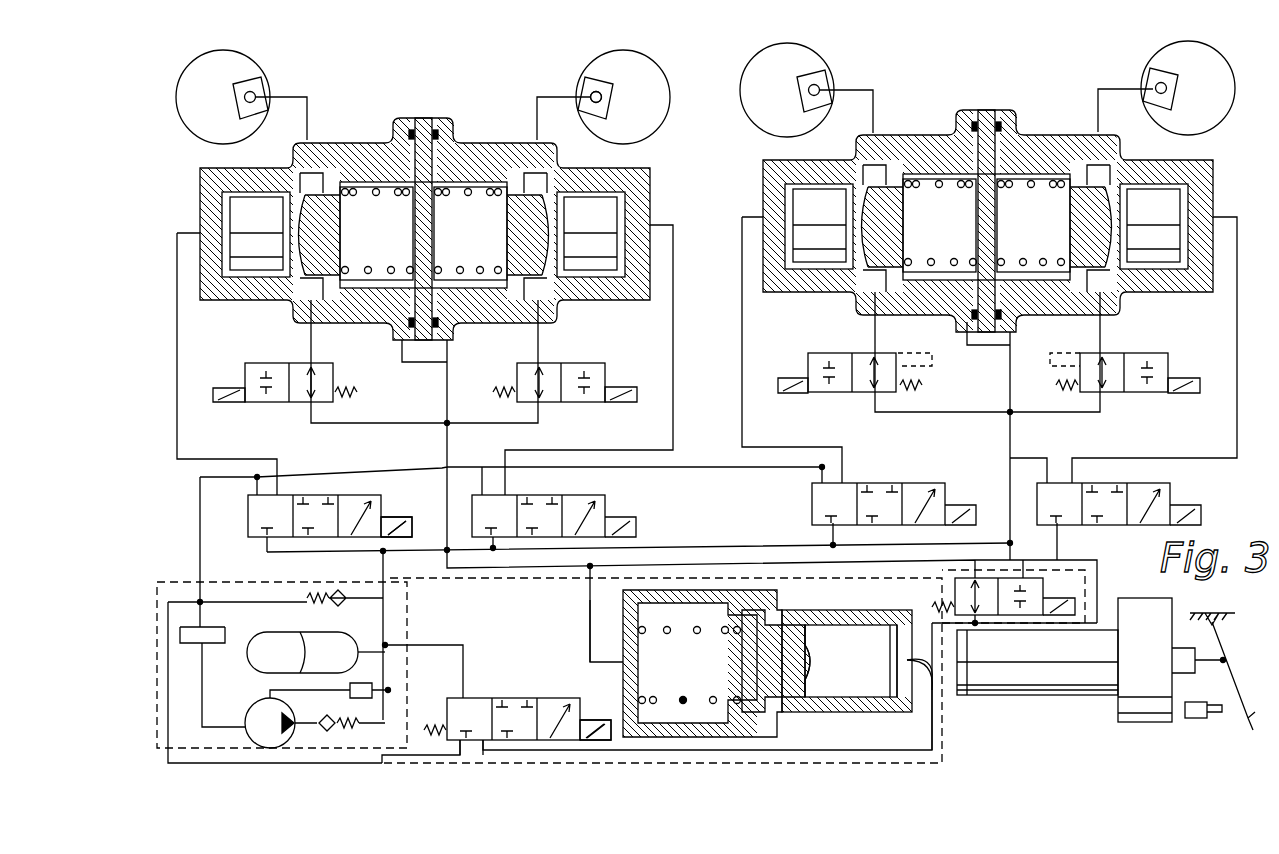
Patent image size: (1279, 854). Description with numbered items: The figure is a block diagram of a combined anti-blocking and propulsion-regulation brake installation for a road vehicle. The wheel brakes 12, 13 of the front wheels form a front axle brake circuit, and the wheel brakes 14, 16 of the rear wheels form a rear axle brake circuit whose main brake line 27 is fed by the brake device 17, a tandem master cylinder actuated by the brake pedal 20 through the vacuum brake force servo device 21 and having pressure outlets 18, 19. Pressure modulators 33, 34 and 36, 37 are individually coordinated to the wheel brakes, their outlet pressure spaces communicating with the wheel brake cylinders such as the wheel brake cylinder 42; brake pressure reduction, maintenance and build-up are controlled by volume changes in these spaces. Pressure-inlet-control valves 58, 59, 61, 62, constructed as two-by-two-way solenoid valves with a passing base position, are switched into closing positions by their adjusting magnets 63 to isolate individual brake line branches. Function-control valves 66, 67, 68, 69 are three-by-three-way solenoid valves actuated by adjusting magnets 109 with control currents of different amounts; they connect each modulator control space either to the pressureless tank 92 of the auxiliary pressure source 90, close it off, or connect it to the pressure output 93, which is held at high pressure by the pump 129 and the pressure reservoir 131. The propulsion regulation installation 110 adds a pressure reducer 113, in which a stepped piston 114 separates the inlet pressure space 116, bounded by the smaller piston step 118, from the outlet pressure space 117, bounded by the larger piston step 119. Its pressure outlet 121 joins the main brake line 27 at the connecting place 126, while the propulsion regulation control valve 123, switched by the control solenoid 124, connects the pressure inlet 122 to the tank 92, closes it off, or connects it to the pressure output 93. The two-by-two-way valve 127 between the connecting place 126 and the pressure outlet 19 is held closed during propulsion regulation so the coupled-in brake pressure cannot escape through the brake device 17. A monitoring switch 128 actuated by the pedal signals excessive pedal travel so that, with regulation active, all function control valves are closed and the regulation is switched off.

The wheel brake 12 is at (806, 90).
The wheel brake 13 is at (1188, 88).
The wheel brake 14 is at (241, 97).
The wheel brake 16 is at (623, 97).
The brake device 17 is at (1085, 697).
The brake pressure-outlet 18 is at (1097, 620).
The brake pressure-outlet 19 is at (905, 658).
The brake pedal 20 is at (1235, 700).
The brake force servo device 21 is at (1165, 610).
The main brake line 27 is at (520, 580).
The pressure modulator 33 is at (988, 193).
The pressure modulator 34 is at (1093, 92).
The pressure modulator 36 is at (378, 135).
The pressure modulator 37 is at (470, 135).
The wheel brake cylinder 42 is at (590, 95).
The pressure-inlet-control valve 58 is at (808, 370).
The pressure-inlet-control valve 59 is at (1170, 370).
The pressure-inlet-control valve 61 is at (245, 380).
The pressure-inlet-control valve 62 is at (605, 375).
The adjusting magnet 63 is at (222, 402).
The function-control valve 66 is at (812, 505).
The function-control valve 67 is at (1172, 498).
The function-control valve 68 is at (248, 515).
The function-control valve 69 is at (600, 508).
The auxiliary pressure source 90 is at (398, 592).
The pressureless tank 92 is at (212, 630).
The pressure output 93 is at (382, 641).
The adjusting magnet 109 is at (393, 517).
The propulsion regulation installation 110 is at (935, 737).
The pressure reducer 113 is at (785, 602).
The stepped piston 114 is at (733, 651).
The inlet pressure space 116 is at (895, 614).
The outlet pressure space 117 is at (590, 650).
The piston step 118 is at (848, 685).
The piston step 119 is at (760, 665).
The pressure outlet 121 is at (630, 660).
The pressure inlet 122 is at (932, 712).
The propulsion regulation control valve 123 is at (515, 690).
The control solenoid 124 is at (592, 718).
The connecting place 126 is at (588, 572).
The 2/2-way valve 127 is at (1040, 592).
The monitoring switch 128 is at (1197, 702).
The pump 129 is at (256, 715).
The pressure reservoir 131 is at (268, 633).